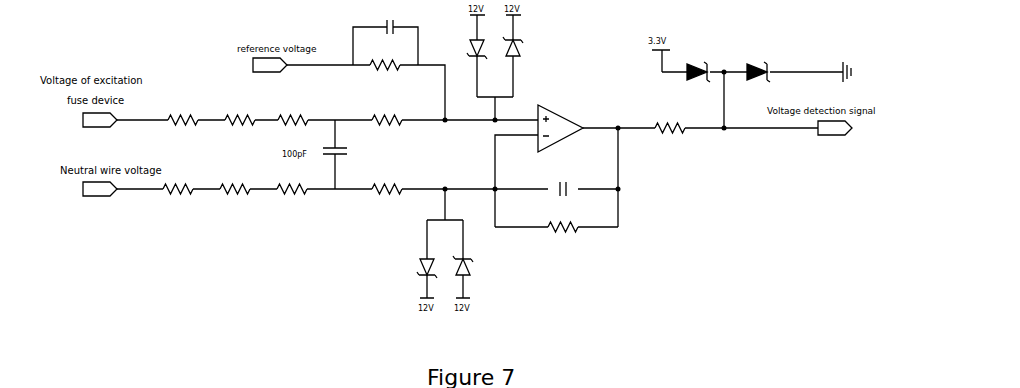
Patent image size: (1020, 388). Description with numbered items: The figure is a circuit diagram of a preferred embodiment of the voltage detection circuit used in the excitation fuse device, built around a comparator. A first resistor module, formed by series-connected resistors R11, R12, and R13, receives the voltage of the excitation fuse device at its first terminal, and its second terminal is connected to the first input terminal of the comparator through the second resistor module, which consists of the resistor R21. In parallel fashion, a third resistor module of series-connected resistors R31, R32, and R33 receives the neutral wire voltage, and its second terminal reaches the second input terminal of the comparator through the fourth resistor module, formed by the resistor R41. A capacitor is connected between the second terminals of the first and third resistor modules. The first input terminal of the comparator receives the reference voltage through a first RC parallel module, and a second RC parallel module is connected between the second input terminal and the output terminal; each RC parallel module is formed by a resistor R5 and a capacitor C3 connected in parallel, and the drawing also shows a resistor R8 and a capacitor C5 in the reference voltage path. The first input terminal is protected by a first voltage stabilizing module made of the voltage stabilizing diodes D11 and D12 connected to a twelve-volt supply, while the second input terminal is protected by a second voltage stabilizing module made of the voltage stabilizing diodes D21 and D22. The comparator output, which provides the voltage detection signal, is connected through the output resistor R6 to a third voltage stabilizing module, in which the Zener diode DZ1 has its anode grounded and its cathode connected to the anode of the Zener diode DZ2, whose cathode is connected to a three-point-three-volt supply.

The resistor R11 is at (183, 113).
The resistor R12 is at (240, 113).
The resistor R13 is at (293, 113).
The resistor R21 is at (387, 114).
The resistor R31 is at (178, 182).
The resistor R32 is at (235, 182).
The resistor R33 is at (292, 182).
The resistor R41 is at (387, 184).
The resistor R8 is at (385, 59).
The resistor R5 is at (563, 221).
The output resistor R6 is at (670, 120).
The capacitor C5 is at (385, 33).
The capacitor C3 is at (562, 183).
The voltage stabilizing diode D11 is at (466, 56).
The voltage stabilizing diode D12 is at (524, 56).
The voltage stabilizing diode D21 is at (418, 259).
The voltage stabilizing diode D22 is at (472, 259).
The Zener diode DZ1 is at (765, 65).
The Zener diode DZ2 is at (696, 65).